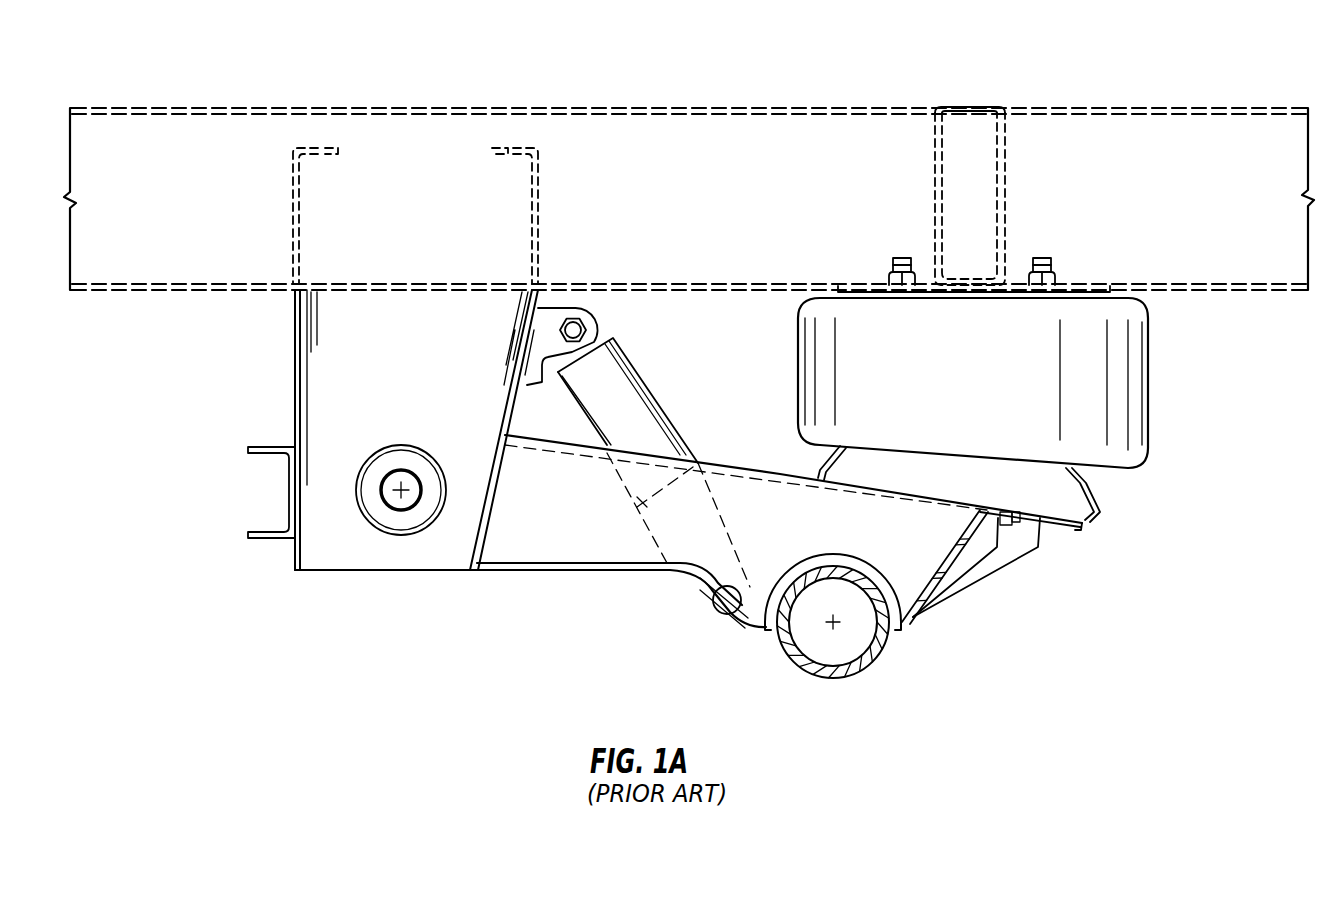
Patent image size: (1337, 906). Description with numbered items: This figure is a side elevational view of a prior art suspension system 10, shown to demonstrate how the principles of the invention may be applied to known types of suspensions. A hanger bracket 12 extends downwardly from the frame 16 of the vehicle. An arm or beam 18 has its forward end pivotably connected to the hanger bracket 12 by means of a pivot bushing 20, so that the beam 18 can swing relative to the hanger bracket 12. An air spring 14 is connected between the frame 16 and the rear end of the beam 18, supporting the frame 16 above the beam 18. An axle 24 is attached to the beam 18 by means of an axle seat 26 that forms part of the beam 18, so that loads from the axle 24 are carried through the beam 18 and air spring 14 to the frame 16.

The suspension system 10 is at (342, 692).
The hanger bracket 12 is at (292, 370).
The air spring 14 is at (1150, 410).
The frame 16 is at (748, 108).
The arm or beam 18 is at (567, 580).
The pivot bushing 20 is at (403, 535).
The axle 24 is at (877, 657).
The axle seat 26 is at (910, 563).